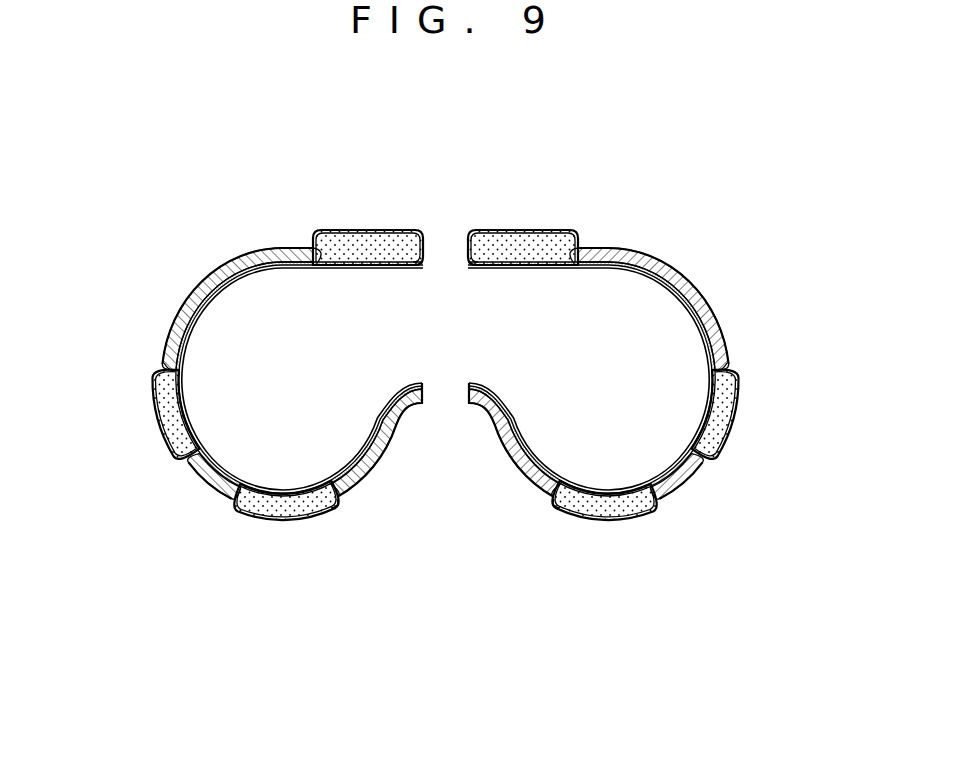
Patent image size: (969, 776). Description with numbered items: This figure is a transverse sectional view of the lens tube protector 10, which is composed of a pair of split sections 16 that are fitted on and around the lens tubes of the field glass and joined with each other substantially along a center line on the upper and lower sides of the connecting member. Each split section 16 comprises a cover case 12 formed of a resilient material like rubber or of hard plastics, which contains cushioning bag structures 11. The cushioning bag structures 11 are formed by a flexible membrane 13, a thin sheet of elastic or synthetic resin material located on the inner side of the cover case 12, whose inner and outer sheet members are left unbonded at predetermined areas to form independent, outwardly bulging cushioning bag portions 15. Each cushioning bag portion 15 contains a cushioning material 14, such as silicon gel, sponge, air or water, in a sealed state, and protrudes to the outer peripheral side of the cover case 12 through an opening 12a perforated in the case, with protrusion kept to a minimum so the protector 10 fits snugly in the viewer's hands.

The lens tube protector 10 is at (432, 205).
The cushioning bag structures 11 is at (258, 276).
The cover case 12 is at (195, 292).
The opening 12a is at (317, 247).
The flexible membrane 13 is at (220, 468).
The cushioning material 14 is at (381, 245).
The cushioning bag portions 15 is at (328, 230).
The split sections 16 is at (213, 258).